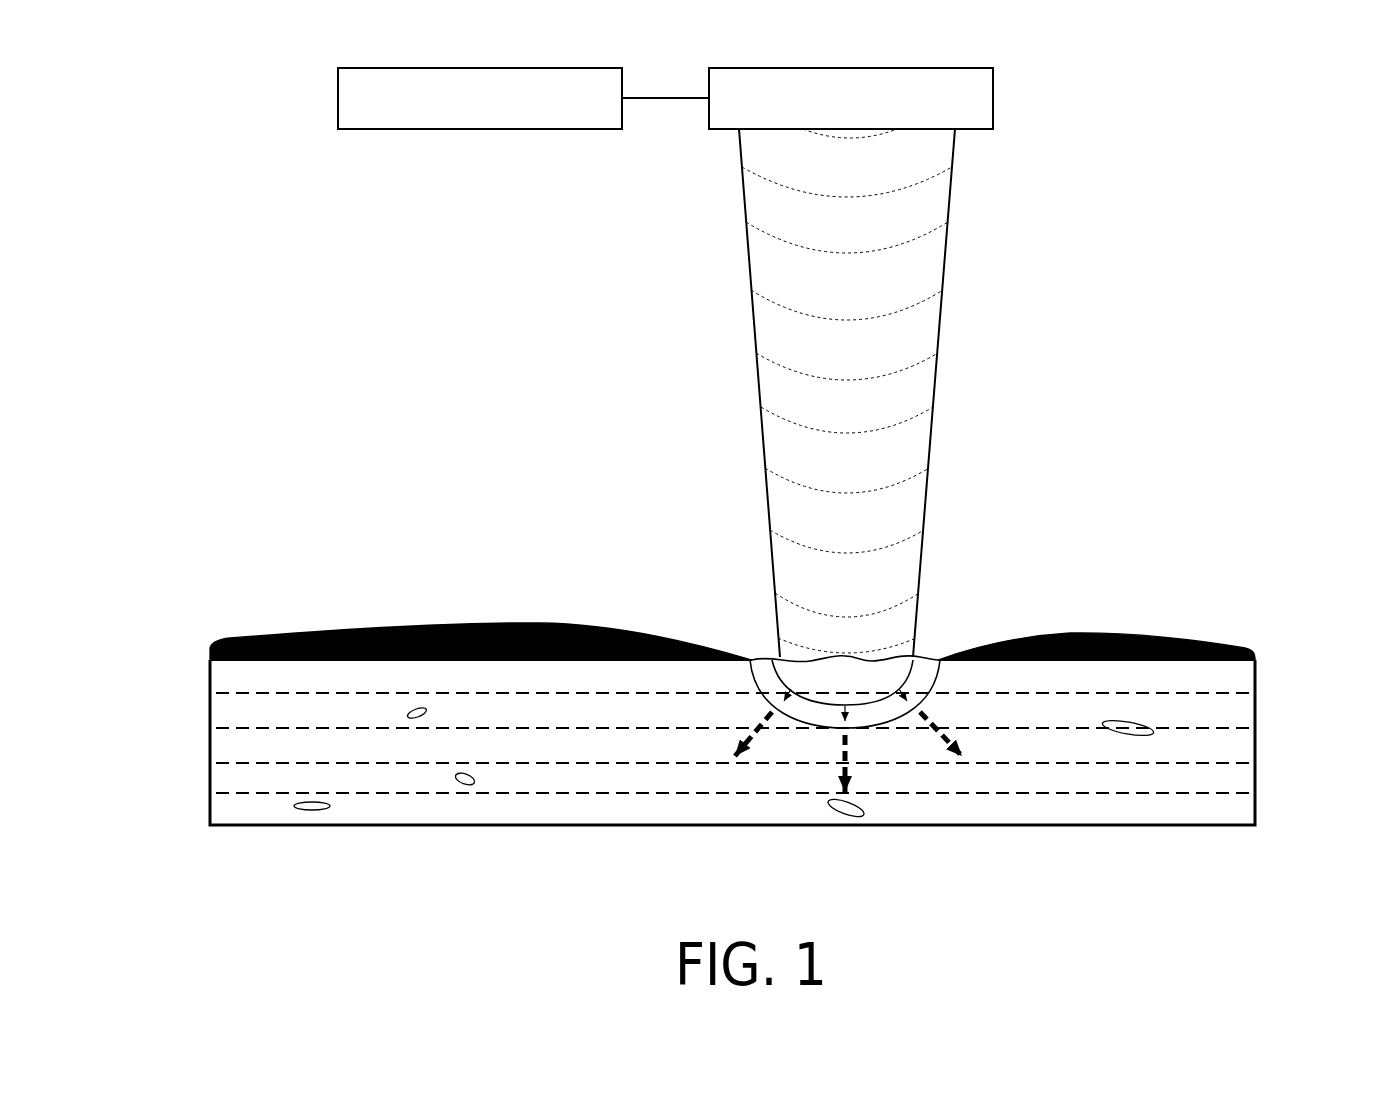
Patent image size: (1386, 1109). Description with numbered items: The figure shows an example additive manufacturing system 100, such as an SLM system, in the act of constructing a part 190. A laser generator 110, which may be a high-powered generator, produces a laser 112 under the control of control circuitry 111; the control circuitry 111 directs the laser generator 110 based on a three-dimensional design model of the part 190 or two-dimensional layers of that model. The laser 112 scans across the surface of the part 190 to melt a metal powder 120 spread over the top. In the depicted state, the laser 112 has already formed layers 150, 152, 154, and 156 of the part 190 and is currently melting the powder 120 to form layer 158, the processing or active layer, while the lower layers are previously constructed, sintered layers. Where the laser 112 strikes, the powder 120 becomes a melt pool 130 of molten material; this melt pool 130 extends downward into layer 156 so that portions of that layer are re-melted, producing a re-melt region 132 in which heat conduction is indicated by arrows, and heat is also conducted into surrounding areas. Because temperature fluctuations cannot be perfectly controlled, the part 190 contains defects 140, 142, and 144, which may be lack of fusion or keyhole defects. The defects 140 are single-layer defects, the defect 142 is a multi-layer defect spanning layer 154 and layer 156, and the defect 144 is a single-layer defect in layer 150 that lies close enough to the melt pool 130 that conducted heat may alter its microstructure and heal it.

The system 100 is at (233, 108).
The laser generator 110 is at (851, 98).
The control circuitry 111 is at (480, 98).
The laser 112 is at (913, 350).
The powder 120 is at (718, 640).
The melt pool 130 is at (878, 680).
The re-melt region 132 is at (902, 672).
The defects 140 is at (465, 781).
The defect 142 is at (1130, 732).
The defect 144 is at (850, 808).
The layer 150 is at (625, 815).
The layer 152 is at (630, 783).
The layer 154 is at (630, 745).
The layer 156 is at (640, 717).
The layer 158 is at (640, 683).
The part 190 is at (1203, 683).